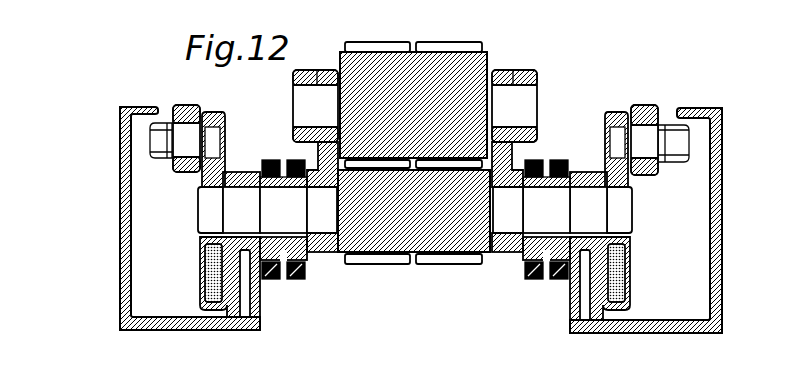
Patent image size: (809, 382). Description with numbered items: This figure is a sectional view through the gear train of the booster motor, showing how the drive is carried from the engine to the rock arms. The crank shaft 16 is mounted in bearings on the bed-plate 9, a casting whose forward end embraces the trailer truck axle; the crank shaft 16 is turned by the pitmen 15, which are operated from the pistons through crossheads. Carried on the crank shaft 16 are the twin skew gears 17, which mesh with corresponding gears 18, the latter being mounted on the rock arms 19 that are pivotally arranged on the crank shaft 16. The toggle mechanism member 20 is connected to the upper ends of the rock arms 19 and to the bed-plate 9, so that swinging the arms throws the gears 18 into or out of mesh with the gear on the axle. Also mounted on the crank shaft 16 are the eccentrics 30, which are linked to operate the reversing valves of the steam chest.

The bed-plate 9 is at (120, 273).
The pitmen 15 is at (182, 105).
The crank shaft 16 is at (217, 212).
The twin skew gears 17 is at (390, 235).
The gears 18 is at (484, 52).
The rock arms 19 is at (325, 146).
The toggle mechanism member 20 is at (293, 75).
The eccentrics 30 is at (303, 282).